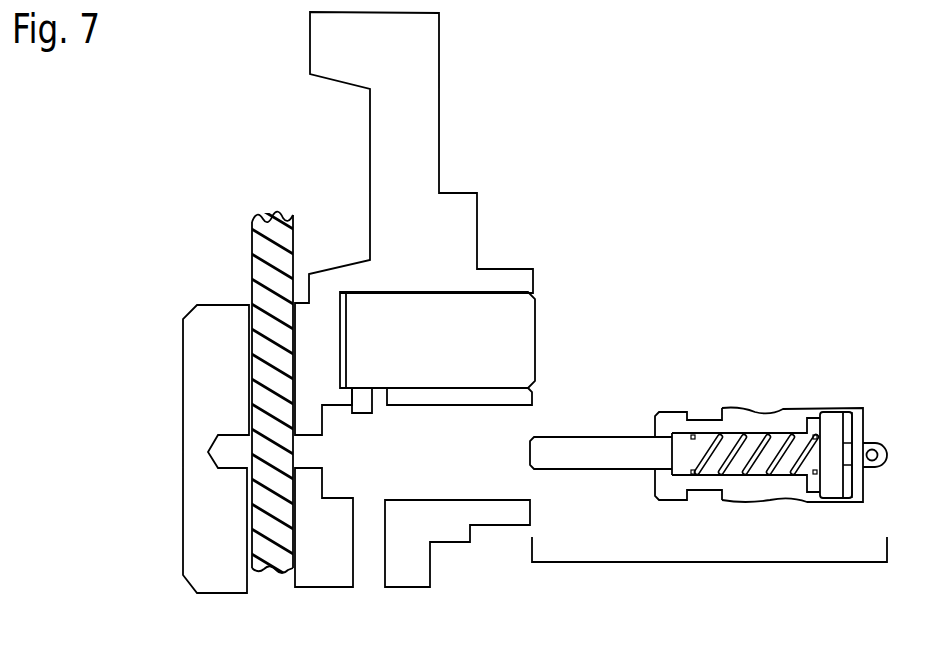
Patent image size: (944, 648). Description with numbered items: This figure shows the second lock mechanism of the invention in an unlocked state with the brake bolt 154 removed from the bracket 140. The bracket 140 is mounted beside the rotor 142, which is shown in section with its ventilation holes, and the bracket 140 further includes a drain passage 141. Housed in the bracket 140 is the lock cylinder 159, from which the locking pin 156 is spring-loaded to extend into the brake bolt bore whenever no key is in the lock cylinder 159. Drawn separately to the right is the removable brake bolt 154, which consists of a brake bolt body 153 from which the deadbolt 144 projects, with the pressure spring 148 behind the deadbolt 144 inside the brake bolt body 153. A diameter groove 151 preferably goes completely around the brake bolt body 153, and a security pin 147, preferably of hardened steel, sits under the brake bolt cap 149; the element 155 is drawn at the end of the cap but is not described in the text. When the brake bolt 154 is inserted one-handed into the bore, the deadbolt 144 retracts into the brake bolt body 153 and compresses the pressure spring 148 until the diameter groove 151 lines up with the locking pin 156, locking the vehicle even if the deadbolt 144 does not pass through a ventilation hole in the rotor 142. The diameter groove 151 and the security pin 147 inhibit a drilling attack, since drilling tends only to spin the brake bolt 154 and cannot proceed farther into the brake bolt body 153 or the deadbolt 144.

The bracket 140 is at (375, 66).
The drain passage 141 is at (370, 565).
The rotor 142 is at (272, 248).
The deadbolt 144 is at (570, 463).
The security pin 147 is at (835, 427).
The pressure spring 148 is at (735, 460).
The brake bolt cap 149 is at (858, 490).
The diameter groove 151 is at (703, 415).
The brake bolt body 153 is at (763, 423).
The brake bolt 154 is at (709, 568).
The eyelet 155 is at (873, 445).
The locking pin 156 is at (368, 402).
The lock cylinder 159 is at (426, 356).